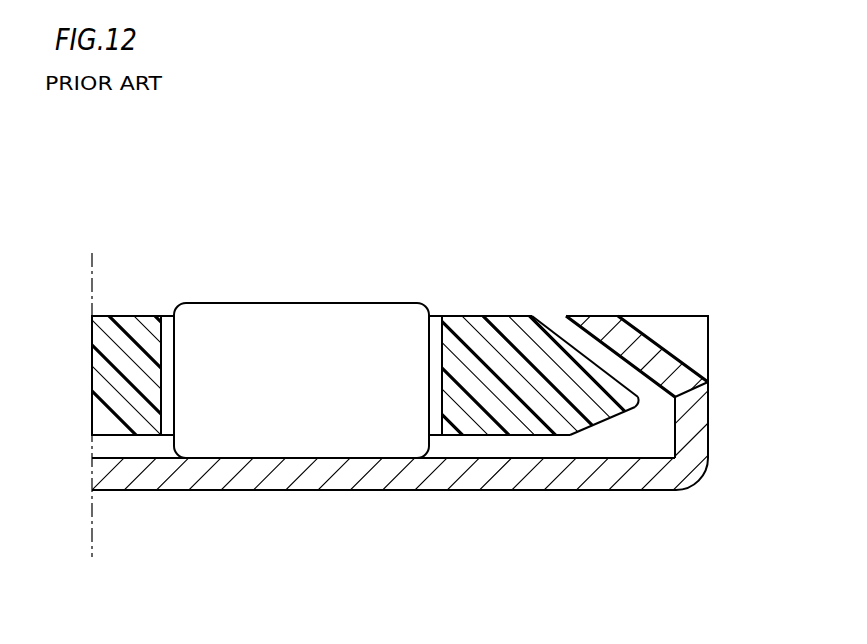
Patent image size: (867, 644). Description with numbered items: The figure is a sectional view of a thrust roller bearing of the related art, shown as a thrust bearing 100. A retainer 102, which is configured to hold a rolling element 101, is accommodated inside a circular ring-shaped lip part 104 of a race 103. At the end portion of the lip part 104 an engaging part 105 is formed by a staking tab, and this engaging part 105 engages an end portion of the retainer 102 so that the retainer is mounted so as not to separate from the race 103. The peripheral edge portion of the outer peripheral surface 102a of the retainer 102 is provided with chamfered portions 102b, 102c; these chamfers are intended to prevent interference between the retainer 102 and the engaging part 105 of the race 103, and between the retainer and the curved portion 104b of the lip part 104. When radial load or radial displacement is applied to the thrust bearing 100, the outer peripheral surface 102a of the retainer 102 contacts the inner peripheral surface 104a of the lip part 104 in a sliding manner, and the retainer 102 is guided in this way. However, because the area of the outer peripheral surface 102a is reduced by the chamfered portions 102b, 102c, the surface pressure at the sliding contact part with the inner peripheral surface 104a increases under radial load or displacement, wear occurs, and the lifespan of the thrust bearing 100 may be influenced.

The thrust bearing 100 is at (613, 206).
The rolling element 101 is at (270, 325).
The retainer 102 is at (470, 340).
The outer peripheral surface 102a is at (662, 398).
The chamfered portion 102b is at (568, 340).
The chamfered portion 102c is at (600, 423).
The race 103 is at (343, 477).
The lip part 104 is at (698, 448).
The inner peripheral surface 104a is at (668, 430).
The curved portion 104b is at (690, 468).
The engaging part 105 is at (622, 340).